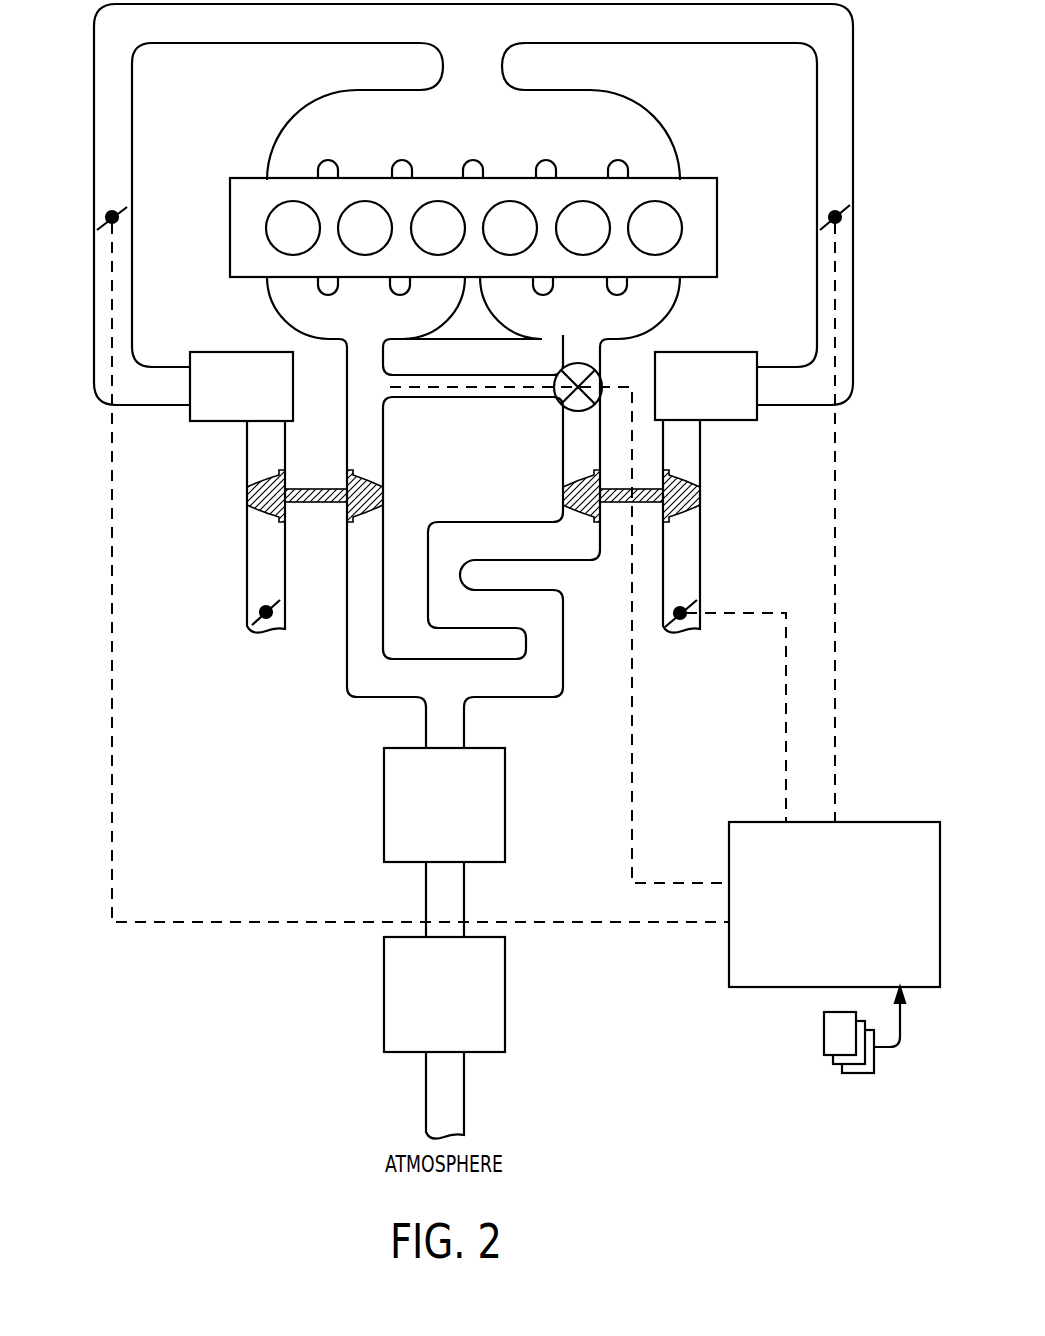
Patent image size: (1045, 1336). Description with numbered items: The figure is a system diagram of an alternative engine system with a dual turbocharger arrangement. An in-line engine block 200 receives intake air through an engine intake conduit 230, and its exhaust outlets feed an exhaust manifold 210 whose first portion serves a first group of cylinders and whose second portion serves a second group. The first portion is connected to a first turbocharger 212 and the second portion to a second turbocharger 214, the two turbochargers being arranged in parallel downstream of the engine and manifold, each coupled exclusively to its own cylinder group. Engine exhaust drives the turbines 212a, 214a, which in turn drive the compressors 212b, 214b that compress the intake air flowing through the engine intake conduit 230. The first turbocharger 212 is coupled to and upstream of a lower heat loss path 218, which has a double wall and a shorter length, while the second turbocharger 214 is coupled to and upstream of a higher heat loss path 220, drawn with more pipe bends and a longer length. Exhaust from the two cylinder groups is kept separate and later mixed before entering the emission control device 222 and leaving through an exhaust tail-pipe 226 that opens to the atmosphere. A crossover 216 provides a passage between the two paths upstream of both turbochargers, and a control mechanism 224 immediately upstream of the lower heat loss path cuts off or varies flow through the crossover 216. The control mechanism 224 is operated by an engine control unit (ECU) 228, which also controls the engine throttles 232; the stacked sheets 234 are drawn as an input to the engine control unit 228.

The in-line engine block 200 is at (489, 272).
The exhaust manifold 210 is at (381, 326).
The first turbocharger 212 is at (247, 500).
The turbine 212a is at (383, 487).
The compressor 212b is at (262, 490).
The second turbocharger 214 is at (700, 503).
The turbine 214a is at (563, 489).
The compressor 214b is at (700, 487).
The crossover 216 is at (473, 392).
The lower heat loss path 218 is at (383, 616).
The higher heat loss path 220 is at (546, 557).
The emission control device 222 is at (459, 819).
The control mechanism 224 is at (603, 368).
The exhaust tail-pipe 226 is at (459, 1097).
The engine control unit (ECU) 228 is at (850, 946).
The engine intake conduit 230 is at (692, 36).
The engine throttles 232 is at (110, 217).
The control program / instructions 234 is at (874, 1060).